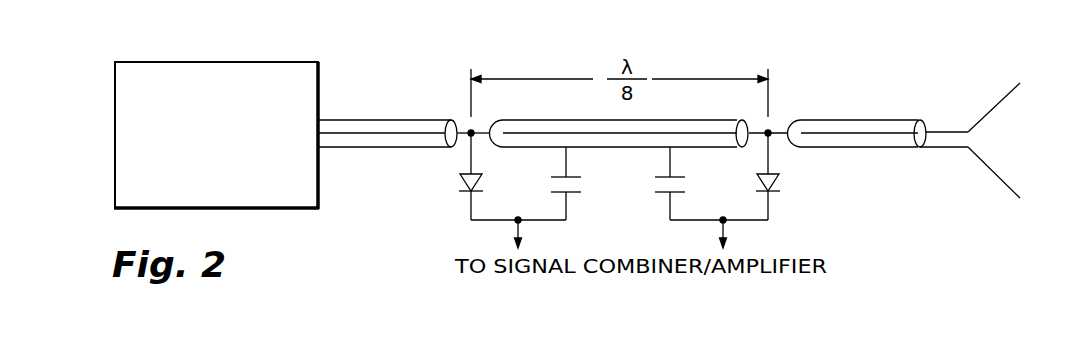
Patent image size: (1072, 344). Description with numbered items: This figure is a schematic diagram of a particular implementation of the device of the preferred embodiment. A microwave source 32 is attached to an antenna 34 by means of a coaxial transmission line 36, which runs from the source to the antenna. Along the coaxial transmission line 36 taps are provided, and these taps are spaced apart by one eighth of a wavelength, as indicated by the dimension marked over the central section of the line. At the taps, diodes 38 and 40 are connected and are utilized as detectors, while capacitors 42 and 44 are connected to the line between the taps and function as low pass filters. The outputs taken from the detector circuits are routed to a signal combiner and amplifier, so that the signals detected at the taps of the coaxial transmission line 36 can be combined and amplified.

The microwave source 32 is at (233, 62).
The antenna 34 is at (1007, 97).
The coaxial transmission line 36 is at (405, 119).
The diode 38 is at (458, 177).
The diode 40 is at (782, 180).
The capacitor 42 is at (580, 185).
The capacitor 44 is at (657, 182).